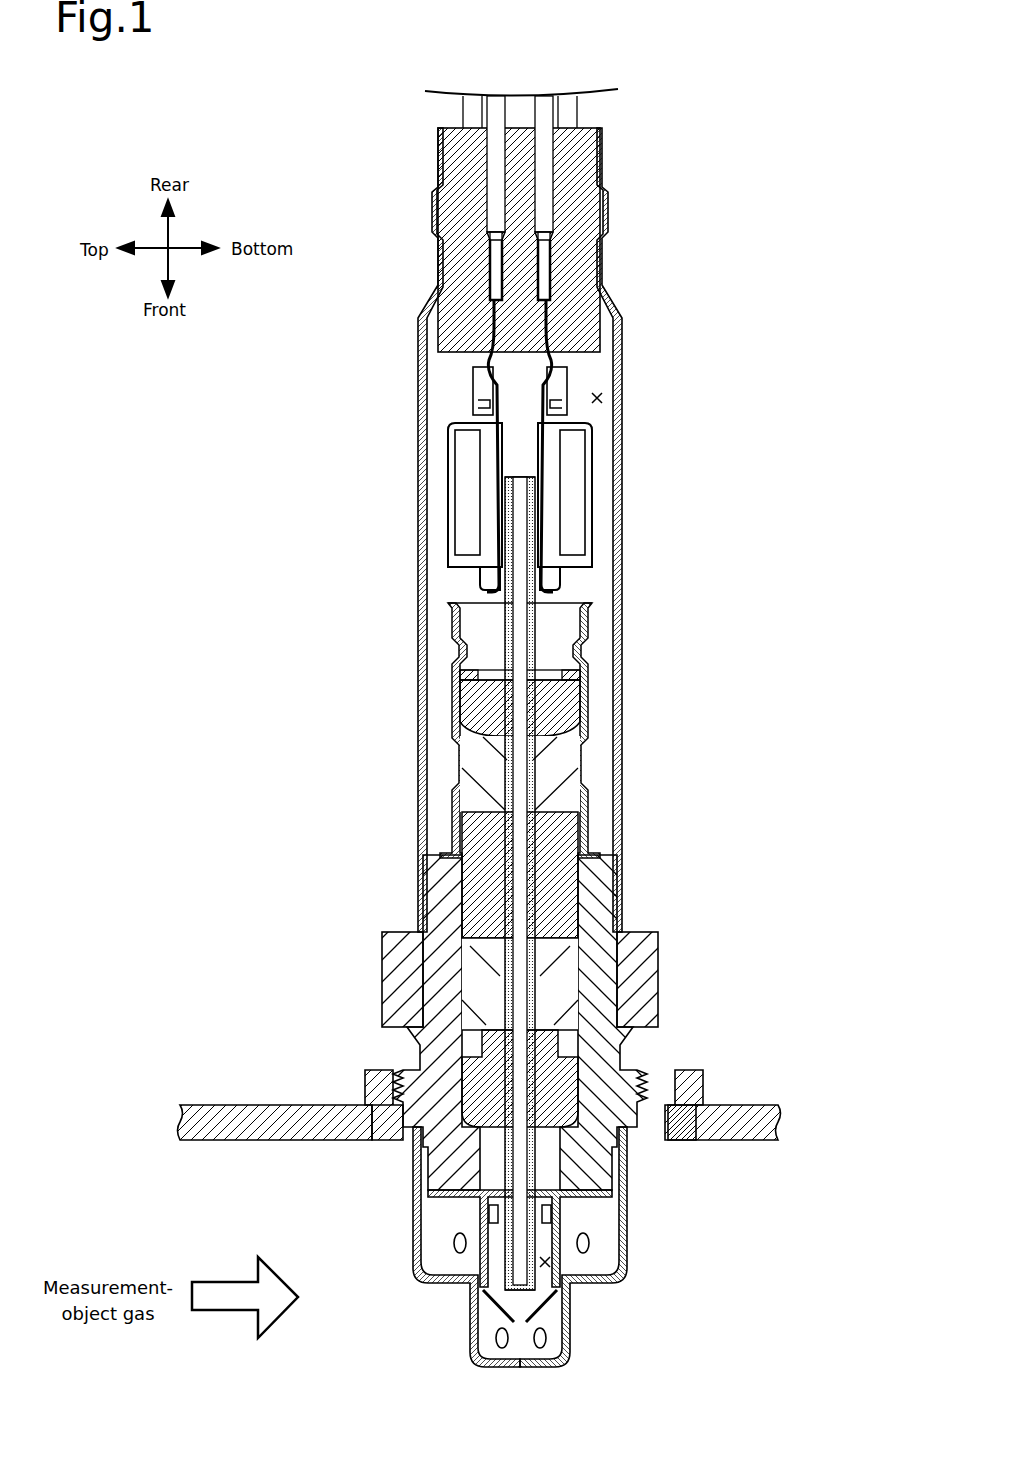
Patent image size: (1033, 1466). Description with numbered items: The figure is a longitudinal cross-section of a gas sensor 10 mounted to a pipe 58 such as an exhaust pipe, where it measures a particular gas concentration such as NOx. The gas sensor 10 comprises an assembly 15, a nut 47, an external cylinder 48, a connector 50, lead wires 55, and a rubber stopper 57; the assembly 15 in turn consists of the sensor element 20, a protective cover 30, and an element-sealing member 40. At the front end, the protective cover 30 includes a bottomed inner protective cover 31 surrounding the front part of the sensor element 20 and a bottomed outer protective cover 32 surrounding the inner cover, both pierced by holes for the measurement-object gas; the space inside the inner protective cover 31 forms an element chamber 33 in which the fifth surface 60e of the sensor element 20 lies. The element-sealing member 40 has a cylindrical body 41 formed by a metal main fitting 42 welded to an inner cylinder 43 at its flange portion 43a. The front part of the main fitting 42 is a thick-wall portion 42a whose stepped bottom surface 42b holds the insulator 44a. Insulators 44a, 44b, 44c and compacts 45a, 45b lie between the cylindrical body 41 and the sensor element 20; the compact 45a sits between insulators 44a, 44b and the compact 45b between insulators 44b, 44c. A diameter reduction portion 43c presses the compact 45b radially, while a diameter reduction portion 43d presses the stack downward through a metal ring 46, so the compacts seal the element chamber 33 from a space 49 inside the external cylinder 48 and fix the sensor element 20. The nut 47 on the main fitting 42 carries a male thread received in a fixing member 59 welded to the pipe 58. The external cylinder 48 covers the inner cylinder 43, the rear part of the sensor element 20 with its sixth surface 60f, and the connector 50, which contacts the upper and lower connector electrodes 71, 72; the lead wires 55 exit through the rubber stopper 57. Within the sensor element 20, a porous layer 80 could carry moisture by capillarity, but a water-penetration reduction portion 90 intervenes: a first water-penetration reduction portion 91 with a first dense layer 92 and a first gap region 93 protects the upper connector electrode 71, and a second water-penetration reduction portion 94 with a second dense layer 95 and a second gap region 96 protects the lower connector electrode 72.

The gas sensor 10 is at (520, 728).
The assembly 15 is at (520, 895).
The sensor element 20 is at (651, 883).
The protective cover 30 is at (606, 1247).
The inner protective cover 31 is at (614, 1212).
The outer protective cover 32 is at (626, 1242).
The element chamber 33 is at (548, 1262).
The element-sealing member 40 is at (549, 899).
The cylindrical body 41 is at (515, 899).
The main fitting 42 is at (491, 1021).
The thick-wall portion 42a is at (440, 1162).
The bottom surface 42b is at (462, 1105).
The inner cylinder 43 is at (515, 730).
The flange portion 43a is at (455, 850).
The diameter reduction portion 43c is at (460, 768).
The diameter reduction portion 43d is at (460, 652).
The insulator 44a is at (610, 1041).
The insulator 44b is at (572, 916).
The insulator 44c is at (572, 726).
The compact 45a is at (567, 992).
The compact 45b is at (565, 790).
The metal ring 46 is at (582, 674).
The nut 47 is at (395, 960).
The external cylinder 48 is at (622, 592).
The space 49 is at (604, 398).
The connector 50 is at (569, 478).
The lead wires 55 is at (497, 176).
The rubber stopper 57 is at (600, 322).
The pipe 58 is at (262, 1110).
The fixing member 59 is at (385, 1090).
The fifth surface 60e is at (548, 1276).
The sixth surface 60f is at (522, 478).
The upper connector electrode 71 is at (505, 513).
The lower connector electrode 72 is at (538, 506).
The porous layer 80 is at (492, 1125).
The water-penetration reduction portion 90 is at (375, 874).
The first water-penetration reduction portion 91 is at (404, 852).
The first dense layer 92 is at (508, 862).
The first gap region 93 is at (508, 846).
The second water-penetration reduction portion 94 is at (403, 899).
The second dense layer 95 is at (505, 898).
The second gap region 96 is at (502, 880).